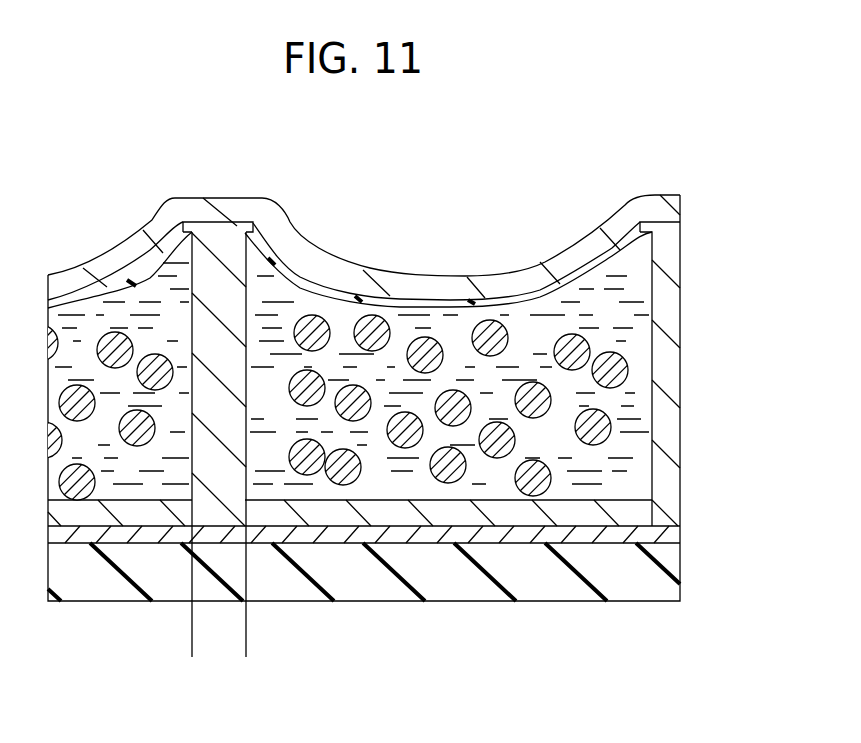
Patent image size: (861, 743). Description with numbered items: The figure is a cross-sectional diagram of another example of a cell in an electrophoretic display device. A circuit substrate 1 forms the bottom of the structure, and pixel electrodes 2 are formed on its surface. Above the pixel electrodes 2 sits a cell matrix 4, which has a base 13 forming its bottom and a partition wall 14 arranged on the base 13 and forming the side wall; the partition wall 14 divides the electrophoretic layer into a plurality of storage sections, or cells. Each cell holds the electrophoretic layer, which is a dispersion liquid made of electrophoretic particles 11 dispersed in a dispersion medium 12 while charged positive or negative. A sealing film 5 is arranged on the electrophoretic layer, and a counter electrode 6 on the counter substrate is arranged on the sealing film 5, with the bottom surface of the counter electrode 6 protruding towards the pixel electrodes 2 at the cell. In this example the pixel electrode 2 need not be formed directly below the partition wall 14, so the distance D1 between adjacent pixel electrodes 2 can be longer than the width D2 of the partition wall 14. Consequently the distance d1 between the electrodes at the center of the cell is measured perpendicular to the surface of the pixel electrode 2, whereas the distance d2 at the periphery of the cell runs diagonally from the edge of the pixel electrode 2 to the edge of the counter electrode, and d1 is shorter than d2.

The circuit substrate 1 is at (635, 583).
The pixel electrode 2 is at (540, 533).
The cell matrix 4 is at (757, 360).
The sealing film 5 is at (493, 302).
The counter electrode 6 is at (540, 278).
The electrophoretic particles 11 is at (463, 518).
The dispersion medium 12 is at (380, 483).
The base 13 is at (613, 477).
The partition wall 14 is at (672, 378).
The distance between the electrodes at the center of the cell d1 is at (450, 526).
The distance between the electrodes at the periphery of the cell d2 is at (595, 526).
The distance between the adjacent pixel electrodes D1 is at (137, 548).
The width of the partition wall D2 is at (285, 650).